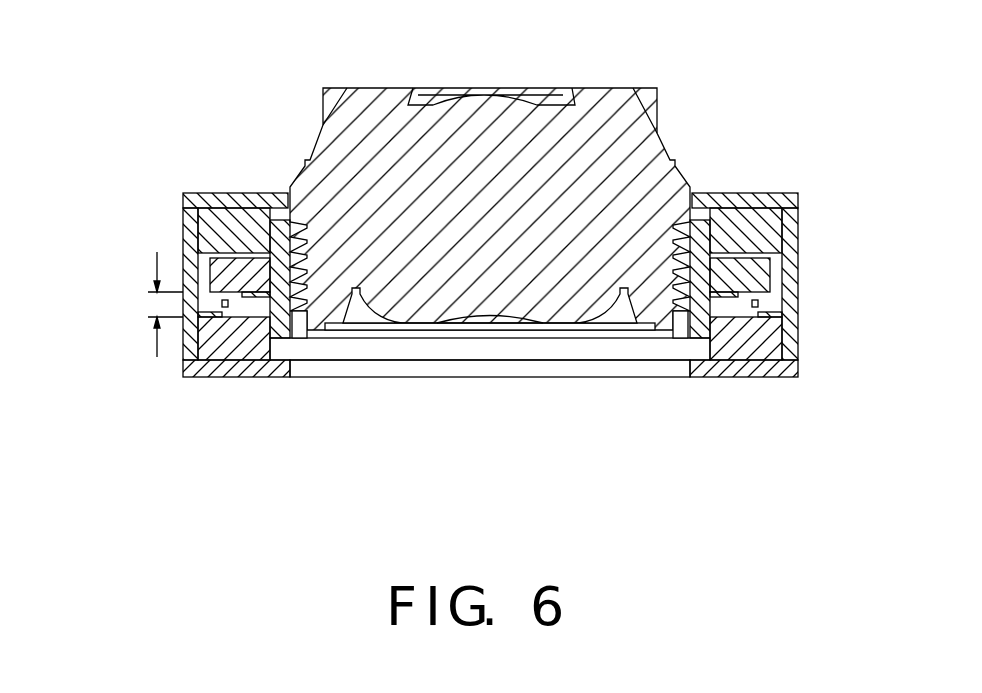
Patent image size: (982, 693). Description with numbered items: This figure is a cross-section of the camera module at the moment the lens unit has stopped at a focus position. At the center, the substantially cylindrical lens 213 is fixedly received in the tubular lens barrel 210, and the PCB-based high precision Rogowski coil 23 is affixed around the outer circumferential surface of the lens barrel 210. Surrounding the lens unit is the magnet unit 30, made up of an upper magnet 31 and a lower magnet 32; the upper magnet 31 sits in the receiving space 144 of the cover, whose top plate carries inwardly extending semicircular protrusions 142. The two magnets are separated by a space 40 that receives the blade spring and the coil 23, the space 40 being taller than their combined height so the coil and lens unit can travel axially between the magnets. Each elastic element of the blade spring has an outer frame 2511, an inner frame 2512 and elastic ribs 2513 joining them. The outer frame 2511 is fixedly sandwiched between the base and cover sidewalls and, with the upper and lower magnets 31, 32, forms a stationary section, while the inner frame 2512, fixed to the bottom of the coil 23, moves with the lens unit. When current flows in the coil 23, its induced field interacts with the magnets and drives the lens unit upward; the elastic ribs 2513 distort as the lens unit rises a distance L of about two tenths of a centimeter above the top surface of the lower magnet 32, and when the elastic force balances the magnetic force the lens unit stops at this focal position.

The lens 213 is at (603, 115).
The lens barrel 210 is at (705, 242).
The protrusions 142 is at (698, 198).
The receiving space 144 is at (282, 215).
The high precision Rogowski coil 23 is at (753, 278).
The inner frame 2512 is at (745, 295).
The elastic ribs 2513 is at (759, 304).
The outer frame 2511 is at (778, 313).
The space 40 is at (738, 308).
The magnet unit 30 is at (75, 207).
The upper magnet 31 is at (220, 233).
The lower magnet 32 is at (220, 342).
The distance L is at (162, 304).